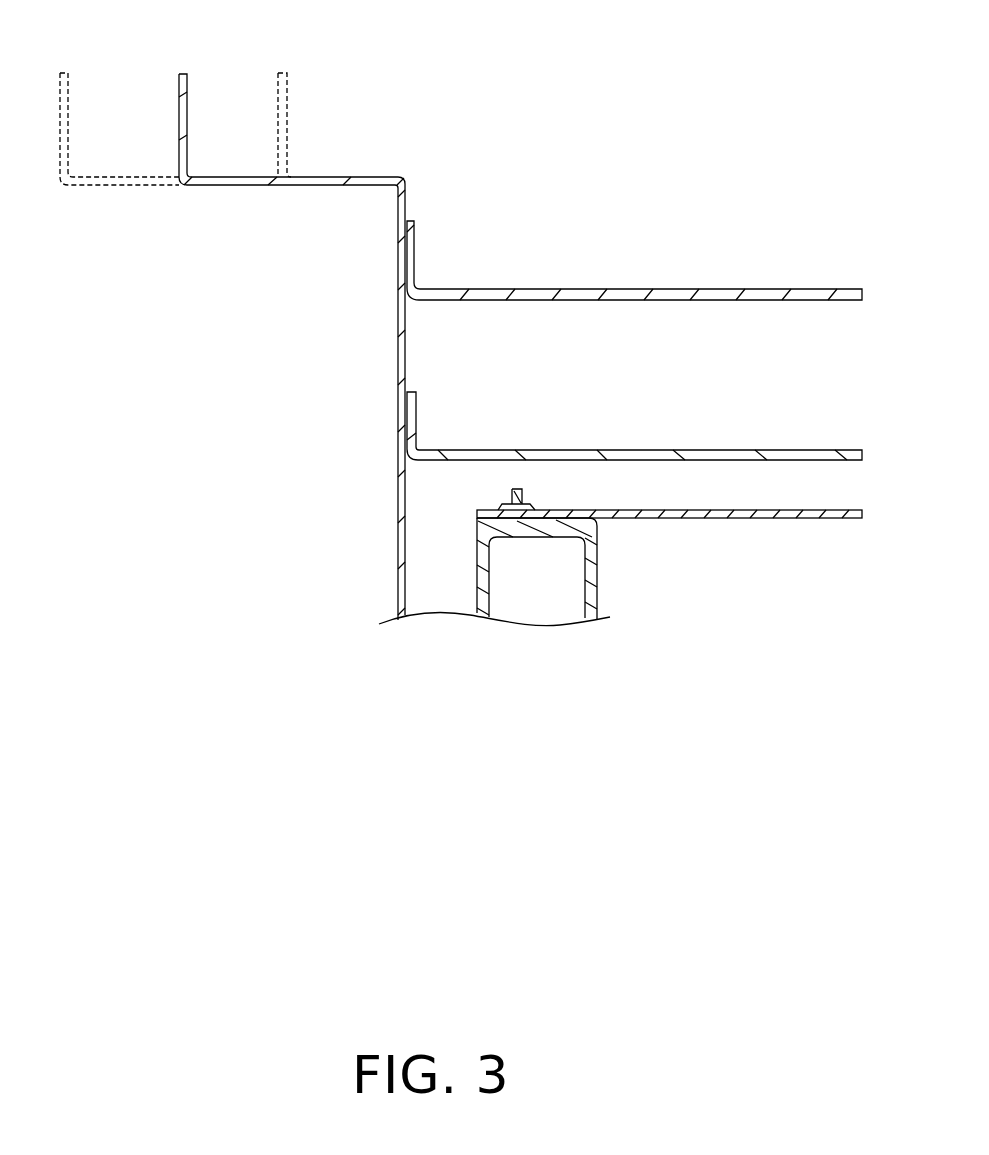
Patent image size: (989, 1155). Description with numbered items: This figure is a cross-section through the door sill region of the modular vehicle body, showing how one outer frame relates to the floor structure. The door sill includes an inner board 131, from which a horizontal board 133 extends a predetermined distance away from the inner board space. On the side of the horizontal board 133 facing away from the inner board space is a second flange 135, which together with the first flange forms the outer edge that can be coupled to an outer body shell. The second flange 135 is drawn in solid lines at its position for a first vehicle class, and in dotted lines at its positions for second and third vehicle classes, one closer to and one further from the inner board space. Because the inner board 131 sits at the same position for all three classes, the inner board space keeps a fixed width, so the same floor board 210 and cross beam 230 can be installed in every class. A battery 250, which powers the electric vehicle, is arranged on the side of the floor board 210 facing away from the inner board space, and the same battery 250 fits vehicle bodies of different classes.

The inner board 131 is at (402, 361).
The horizontal board 133 is at (253, 180).
The second flange 135 is at (63, 110).
The floor board 210 is at (720, 455).
The cross beam 230 is at (669, 295).
The battery 250 is at (718, 515).